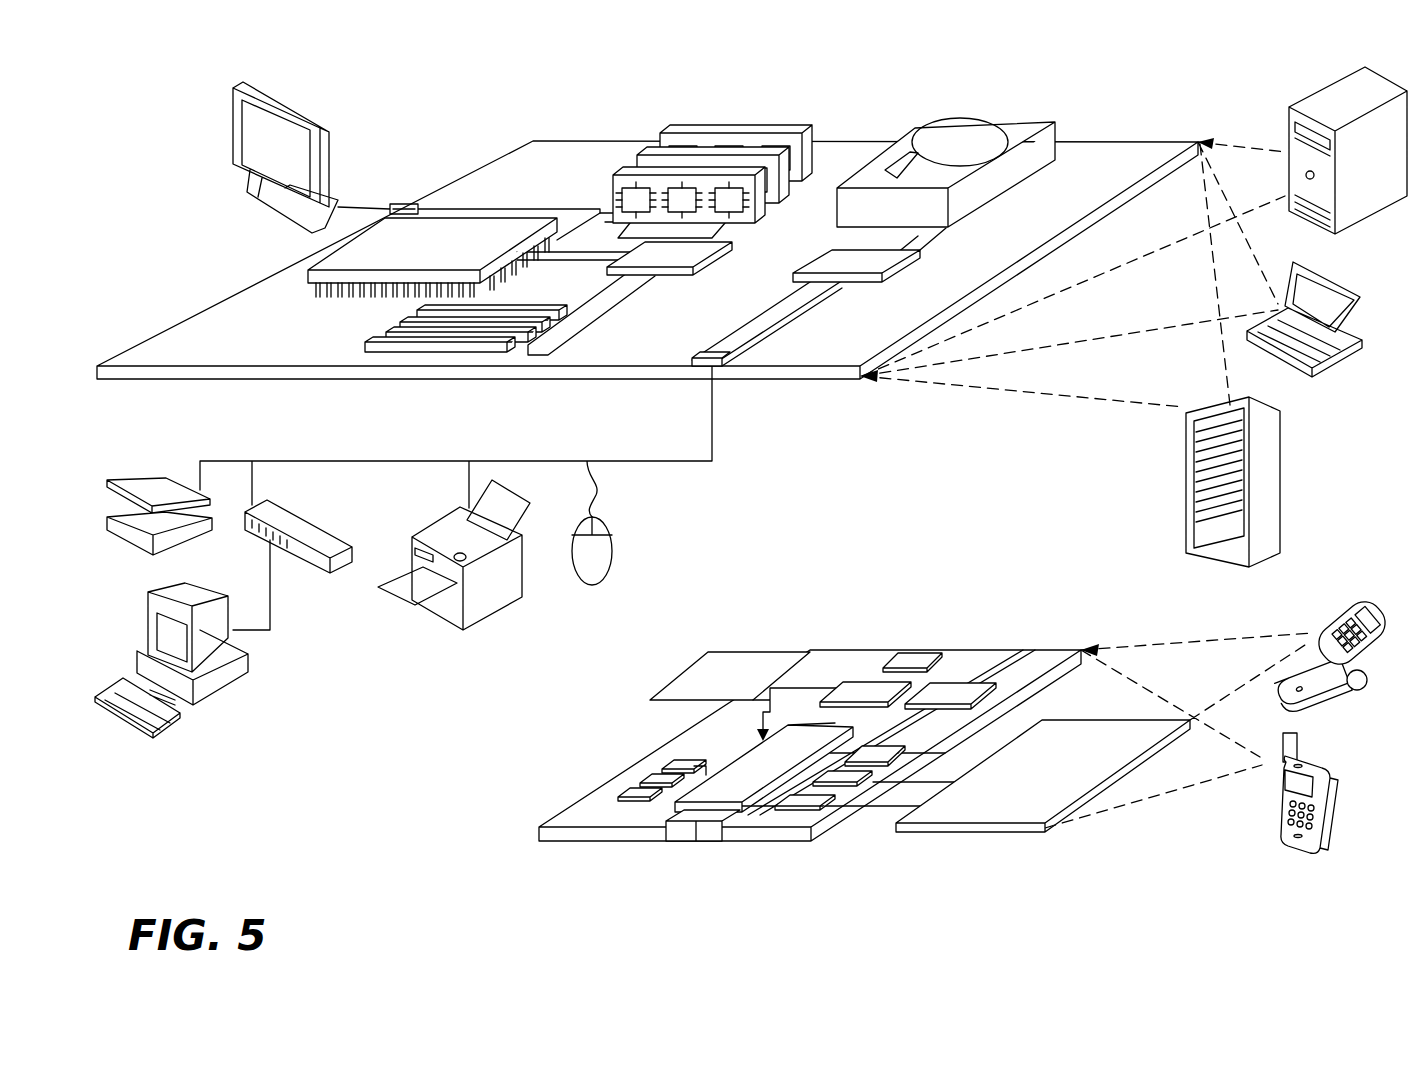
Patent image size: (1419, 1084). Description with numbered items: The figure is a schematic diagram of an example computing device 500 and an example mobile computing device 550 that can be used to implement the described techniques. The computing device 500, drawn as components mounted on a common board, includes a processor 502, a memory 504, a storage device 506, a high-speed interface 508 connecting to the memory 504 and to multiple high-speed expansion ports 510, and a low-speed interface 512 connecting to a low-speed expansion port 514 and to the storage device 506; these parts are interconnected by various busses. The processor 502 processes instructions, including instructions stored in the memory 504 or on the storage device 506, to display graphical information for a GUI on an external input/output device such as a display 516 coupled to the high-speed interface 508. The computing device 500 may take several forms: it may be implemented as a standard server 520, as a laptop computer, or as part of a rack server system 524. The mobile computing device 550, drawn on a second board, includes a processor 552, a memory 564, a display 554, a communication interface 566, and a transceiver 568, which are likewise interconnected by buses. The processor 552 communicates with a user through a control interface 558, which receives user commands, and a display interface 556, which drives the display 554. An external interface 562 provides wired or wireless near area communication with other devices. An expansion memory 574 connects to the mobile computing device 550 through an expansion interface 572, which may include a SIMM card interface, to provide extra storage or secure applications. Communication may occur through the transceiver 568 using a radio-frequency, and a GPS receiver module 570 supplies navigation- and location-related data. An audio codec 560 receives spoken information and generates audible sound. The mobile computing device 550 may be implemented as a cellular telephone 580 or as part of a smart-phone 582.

The computing device 500 is at (452, 110).
The processor 502 is at (320, 273).
The memory 504 is at (690, 166).
The storage device 506 is at (938, 132).
The high-speed interface 508 is at (632, 252).
The high-speed expansion ports 510 is at (385, 338).
The low-speed interface 512 is at (840, 262).
The low-speed expansion port 514 is at (722, 364).
The display 516 is at (238, 88).
The standard server 520 is at (1290, 128).
The rack server system 524 is at (1188, 502).
The mobile computing device 550 is at (512, 845).
The processor 552 is at (733, 800).
The display 554 is at (1005, 817).
The display interface 556 is at (825, 808).
The control interface 558 is at (850, 784).
The audio codec 560 is at (878, 762).
The external interface 562 is at (694, 825).
The memory 564 is at (622, 792).
The communication interface 566 is at (870, 692).
The transceiver 568 is at (952, 686).
The GPS receiver module 570 is at (932, 660).
The expansion interface 572 is at (790, 663).
The expansion memory 574 is at (716, 666).
The cellular telephone 580 is at (1318, 628).
The smart-phone 582 is at (1278, 790).